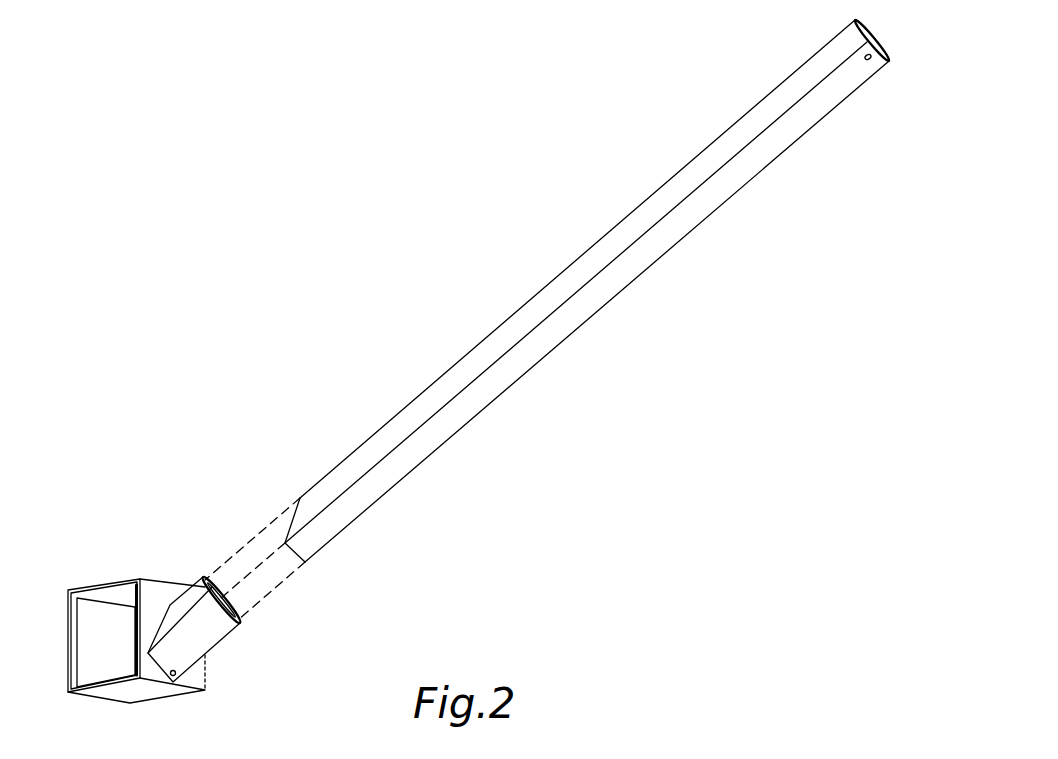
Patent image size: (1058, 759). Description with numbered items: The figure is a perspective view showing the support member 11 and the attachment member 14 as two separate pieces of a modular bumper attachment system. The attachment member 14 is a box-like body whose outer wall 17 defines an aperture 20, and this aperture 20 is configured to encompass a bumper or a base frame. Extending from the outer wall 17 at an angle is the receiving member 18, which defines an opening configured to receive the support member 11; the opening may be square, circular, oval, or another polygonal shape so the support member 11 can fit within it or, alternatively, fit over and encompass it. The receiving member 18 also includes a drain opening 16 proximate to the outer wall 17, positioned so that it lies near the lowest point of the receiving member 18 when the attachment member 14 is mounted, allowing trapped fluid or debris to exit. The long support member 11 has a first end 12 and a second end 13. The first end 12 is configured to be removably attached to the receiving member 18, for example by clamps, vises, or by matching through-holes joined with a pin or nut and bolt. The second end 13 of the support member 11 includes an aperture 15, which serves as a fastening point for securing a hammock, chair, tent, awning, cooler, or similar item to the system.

The support member 11 is at (578, 310).
The first end 12 is at (322, 540).
The second end 13 is at (845, 37).
The attachment member 14 is at (104, 572).
The aperture 15 is at (873, 60).
The drain opening 16 is at (167, 704).
The outer wall 17 is at (118, 690).
The receiving member 18 is at (223, 622).
The aperture 20 is at (88, 640).